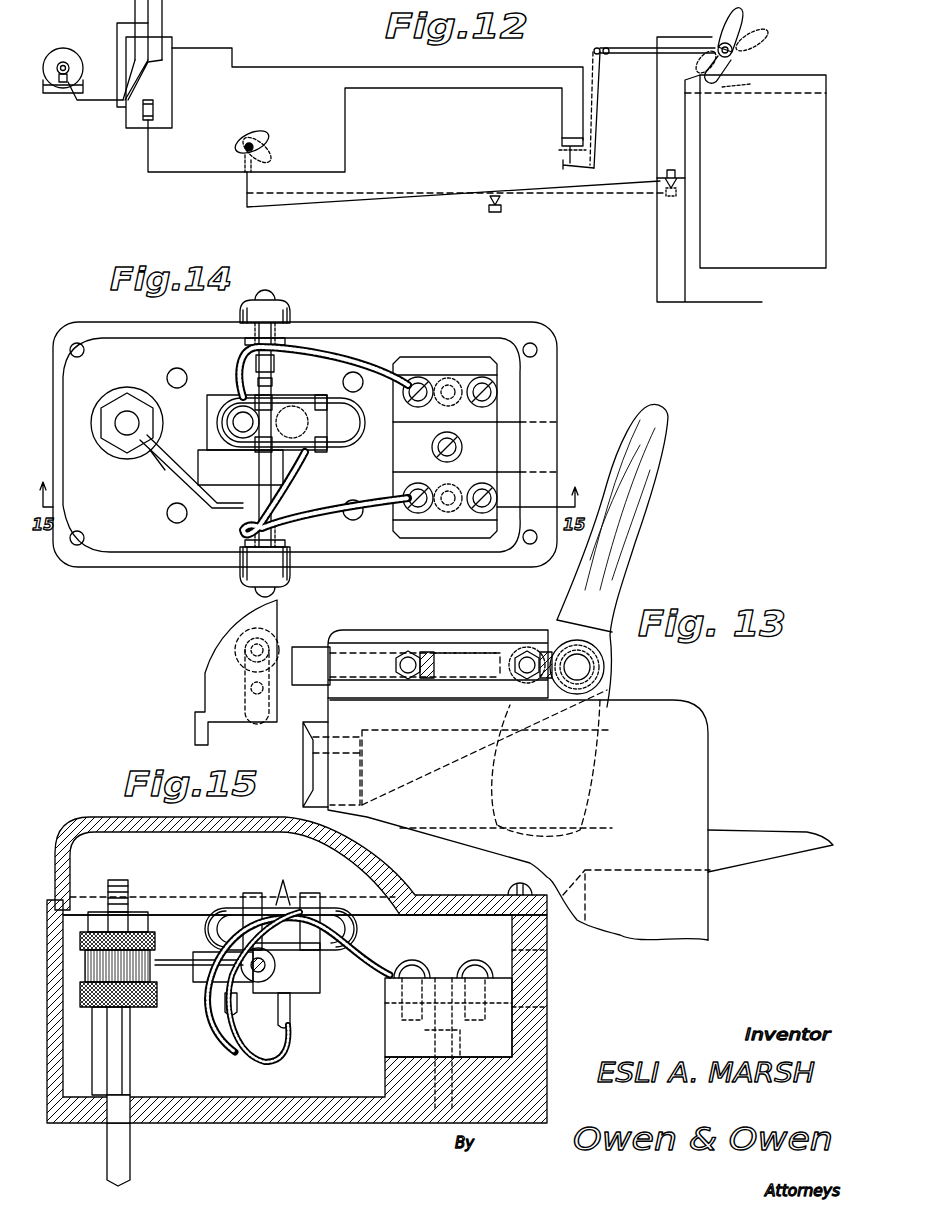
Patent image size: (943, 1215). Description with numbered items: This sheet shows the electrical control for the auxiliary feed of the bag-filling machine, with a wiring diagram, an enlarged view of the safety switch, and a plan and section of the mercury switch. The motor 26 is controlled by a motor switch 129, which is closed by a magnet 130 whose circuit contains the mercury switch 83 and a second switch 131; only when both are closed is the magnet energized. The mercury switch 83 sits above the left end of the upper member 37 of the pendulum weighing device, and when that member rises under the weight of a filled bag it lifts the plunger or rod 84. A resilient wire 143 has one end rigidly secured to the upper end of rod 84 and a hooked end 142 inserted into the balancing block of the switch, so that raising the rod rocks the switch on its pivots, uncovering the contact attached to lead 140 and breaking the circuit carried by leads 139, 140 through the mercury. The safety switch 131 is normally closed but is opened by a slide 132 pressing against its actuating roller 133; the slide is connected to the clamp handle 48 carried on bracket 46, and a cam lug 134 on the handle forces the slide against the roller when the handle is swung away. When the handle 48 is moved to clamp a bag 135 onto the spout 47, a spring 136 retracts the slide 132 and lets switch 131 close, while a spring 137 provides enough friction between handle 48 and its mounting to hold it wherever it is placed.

In FIG. 12, the motor 26 is at (67, 50).
In FIG. 12, the motor switch 129 is at (160, 52).
In FIG. 12, the magnet 130 is at (153, 108).
In FIG. 12, the mercury switch 83 is at (255, 135).
In FIG. 14, the mercury switch 83 is at (356, 428).
In FIG. 15, the mercury switch 83 is at (360, 928).
In FIG. 12, the upper member 37 is at (290, 205).
In FIG. 12, the switch 131 is at (565, 140).
In FIG. 13, the switch 131 is at (213, 670).
In FIG. 12, the member (slide) 132 is at (627, 47).
In FIG. 13, the member (slide) 132 is at (318, 645).
In FIG. 12, the clamp (handle) 48 is at (738, 24).
In FIG. 13, the clamp (handle) 48 is at (643, 510).
In FIG. 12, the spout 47 is at (770, 80).
In FIG. 13, the spout 47 is at (752, 832).
In FIG. 12, the bag 135 is at (770, 270).
In FIG. 14, the plunger (rod) 84 is at (122, 433).
In FIG. 15, the plunger (rod) 84 is at (125, 1078).
In FIG. 14, the hooked end 142 is at (255, 482).
In FIG. 14, the resilient wire 143 is at (218, 508).
In FIG. 15, the resilient wire 143 is at (171, 970).
In FIG. 14, the lead 140 is at (353, 346).
In FIG. 15, the lead 140 is at (215, 1052).
In FIG. 14, the lead 139 is at (333, 514).
In FIG. 15, the lead 139 is at (290, 1060).
In FIG. 13, the spring 137 is at (595, 667).
In FIG. 13, the bracket 46 is at (410, 630).
In FIG. 13, the spring 136 is at (428, 650).
In FIG. 13, the actuating roller 133 is at (277, 640).
In FIG. 13, the cam lug 134 is at (518, 696).